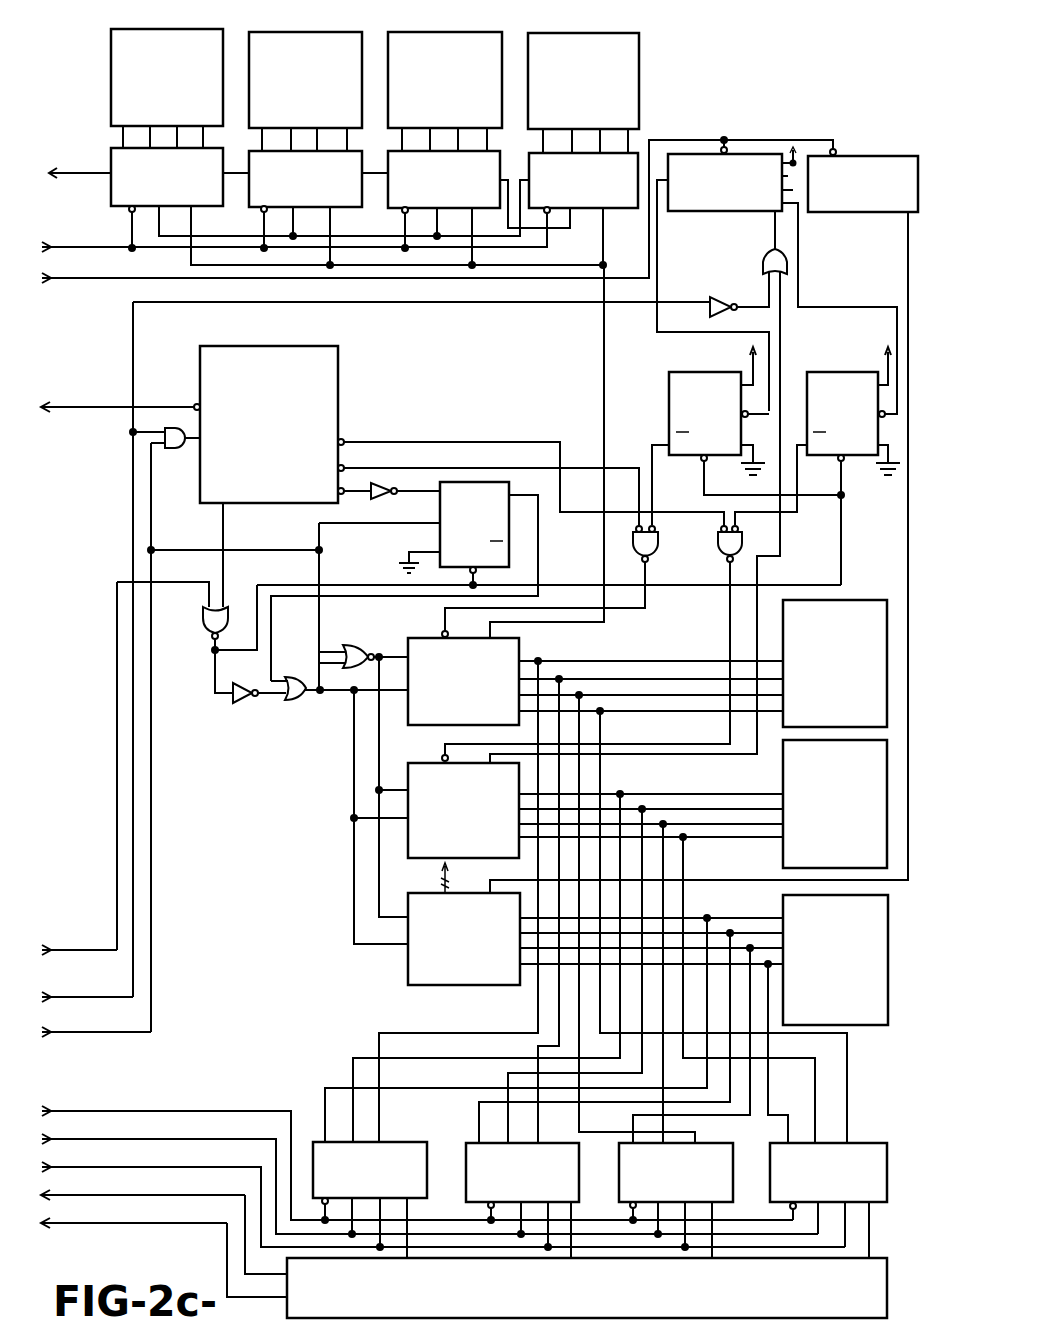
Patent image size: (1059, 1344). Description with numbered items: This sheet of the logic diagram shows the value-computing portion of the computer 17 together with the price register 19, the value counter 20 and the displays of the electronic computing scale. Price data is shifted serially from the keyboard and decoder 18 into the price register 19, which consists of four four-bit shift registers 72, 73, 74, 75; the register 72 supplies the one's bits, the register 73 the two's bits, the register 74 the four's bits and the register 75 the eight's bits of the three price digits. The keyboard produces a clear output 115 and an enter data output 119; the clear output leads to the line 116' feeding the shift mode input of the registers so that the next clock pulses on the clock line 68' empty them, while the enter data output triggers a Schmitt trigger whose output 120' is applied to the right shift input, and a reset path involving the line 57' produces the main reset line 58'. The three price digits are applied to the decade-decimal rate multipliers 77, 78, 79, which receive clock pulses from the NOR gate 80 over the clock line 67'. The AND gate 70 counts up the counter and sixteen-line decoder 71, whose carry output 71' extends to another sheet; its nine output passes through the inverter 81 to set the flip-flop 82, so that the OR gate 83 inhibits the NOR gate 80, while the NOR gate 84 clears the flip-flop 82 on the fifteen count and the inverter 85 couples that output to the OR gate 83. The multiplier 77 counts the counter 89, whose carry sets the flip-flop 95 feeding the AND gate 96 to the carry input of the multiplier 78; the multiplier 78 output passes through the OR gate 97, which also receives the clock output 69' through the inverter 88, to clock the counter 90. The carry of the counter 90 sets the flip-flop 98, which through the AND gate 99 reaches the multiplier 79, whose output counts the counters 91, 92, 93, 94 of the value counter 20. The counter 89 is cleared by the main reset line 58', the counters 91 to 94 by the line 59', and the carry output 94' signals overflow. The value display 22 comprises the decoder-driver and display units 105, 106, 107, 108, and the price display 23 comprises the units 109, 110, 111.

The decoder-driver and display unit 108 is at (148, 30).
The decoder-driver and display unit 107 is at (283, 31).
The decoder-driver and display unit 106 is at (423, 31).
The decoder-driver and display unit 105 is at (588, 33).
The 4-bit decoder counter 94 is at (177, 181).
The 4-bit decoder counter 93 is at (338, 209).
The 4-bit decoder counter 92 is at (476, 210).
The 4-bit decoder counter 91 is at (607, 212).
The 4-bit decoder counter 90 is at (684, 214).
The 4-bit decoder counter 89 is at (823, 215).
The value display 22 is at (94, 79).
The value counter 20 is at (98, 150).
The carry output 94' is at (80, 190).
The output of OR gate 59 59' is at (296, 229).
The main reset line 58' is at (439, 224).
The OR gate 97 is at (763, 262).
The inverter 88 is at (718, 296).
The computer 17 is at (190, 356).
The counter and sixteen-line decoder 71 is at (292, 424).
The output of counter and decoder 71 71' is at (117, 424).
The AND gate 70 is at (165, 455).
The inverter 81 is at (386, 480).
The flip-flop 82 is at (432, 540).
The flip-flop 98 is at (669, 398).
The flip-flop 95 is at (852, 353).
The AND gate 96 is at (718, 540).
The AND gate 99 is at (658, 552).
The decoder-driver and display unit 111 is at (838, 600).
The decoder-driver and display unit 110 is at (780, 776).
The decoder-driver and display unit 109 is at (780, 908).
The price display 23 is at (867, 1036).
The NOR gate 84 is at (205, 628).
The inverter 85 is at (245, 708).
The OR gate 83 is at (292, 705).
The NOR gate 80 is at (358, 652).
The decade-decimal rate multiplier 79 is at (436, 728).
The decade-decimal rate multiplier 78 is at (424, 862).
The decade-decimal rate multiplier 77 is at (415, 986).
The output of OR gate 57 57' is at (79, 935).
The controlled clock output 69' is at (87, 984).
The clock line 67' is at (96, 1047).
The output of Schmitt trigger 120 120' is at (417, 1153).
The clock line 68' is at (430, 1174).
The output of OR gate 116 116' is at (443, 1194).
The enter data output 119 is at (100, 1196).
The clear output 115 is at (106, 1225).
The 4-bit shift register 72 is at (425, 1128).
The 4-bit shift register 73 is at (588, 1146).
The 4-bit shift register 74 is at (710, 1143).
The 4-bit shift register 75 is at (858, 1143).
The price register 19 is at (899, 1184).
The keyboard and decoder 18 is at (887, 1290).